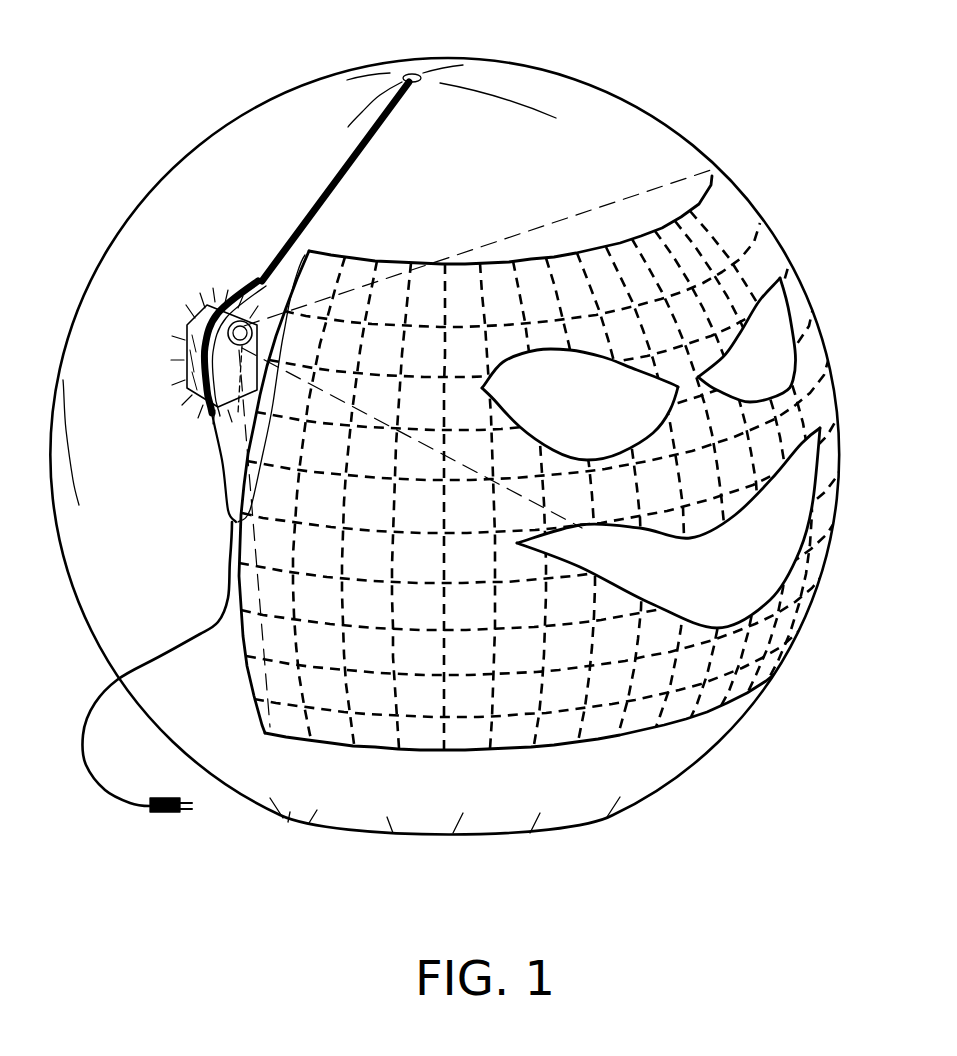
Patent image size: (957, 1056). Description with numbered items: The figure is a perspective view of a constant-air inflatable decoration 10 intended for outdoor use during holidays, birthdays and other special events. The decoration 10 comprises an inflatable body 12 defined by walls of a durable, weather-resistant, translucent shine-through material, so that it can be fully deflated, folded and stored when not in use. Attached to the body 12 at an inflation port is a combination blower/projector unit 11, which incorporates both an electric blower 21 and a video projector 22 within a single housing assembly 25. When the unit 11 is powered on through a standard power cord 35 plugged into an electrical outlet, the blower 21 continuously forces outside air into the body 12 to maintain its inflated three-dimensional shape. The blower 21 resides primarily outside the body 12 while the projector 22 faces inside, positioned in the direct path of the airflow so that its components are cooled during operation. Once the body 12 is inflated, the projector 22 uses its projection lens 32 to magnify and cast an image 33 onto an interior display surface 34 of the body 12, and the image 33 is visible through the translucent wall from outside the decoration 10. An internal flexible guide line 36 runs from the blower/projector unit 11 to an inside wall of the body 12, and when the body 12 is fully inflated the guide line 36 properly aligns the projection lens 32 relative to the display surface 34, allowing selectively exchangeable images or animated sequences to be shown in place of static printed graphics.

The constant-air inflatable decoration 10 is at (465, 441).
The combination blower/projector unit 11 is at (417, 447).
The inflatable body 12 is at (242, 137).
The electric blower 21 is at (187, 345).
The video projector 22 is at (305, 255).
The housing assembly 25 is at (205, 408).
The projection lens 32 is at (222, 398).
The image 33 is at (795, 330).
The interior display surface 34 is at (638, 723).
The power cord 35 is at (80, 744).
The internal flexible guide line 36 is at (363, 145).